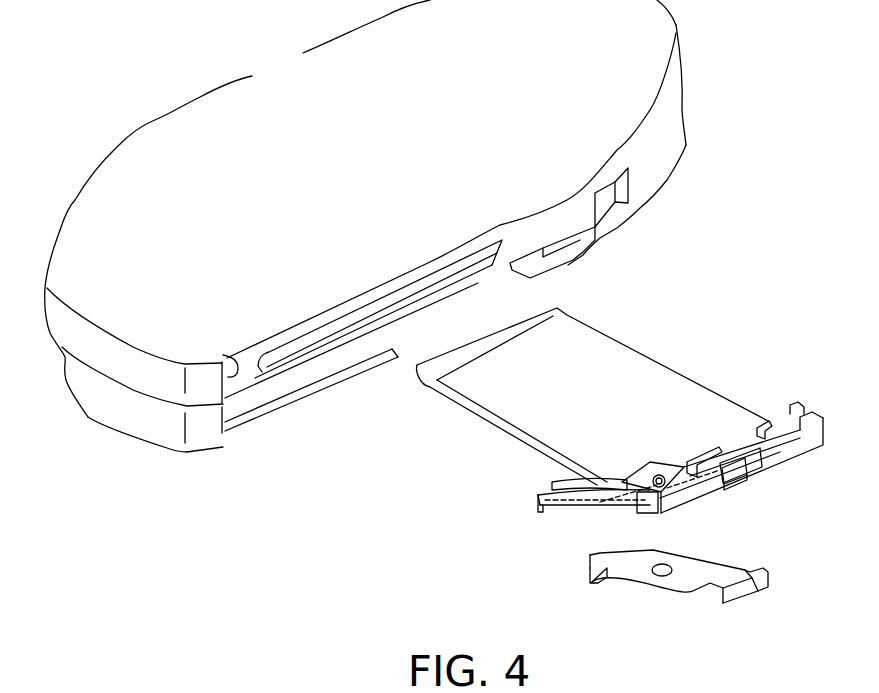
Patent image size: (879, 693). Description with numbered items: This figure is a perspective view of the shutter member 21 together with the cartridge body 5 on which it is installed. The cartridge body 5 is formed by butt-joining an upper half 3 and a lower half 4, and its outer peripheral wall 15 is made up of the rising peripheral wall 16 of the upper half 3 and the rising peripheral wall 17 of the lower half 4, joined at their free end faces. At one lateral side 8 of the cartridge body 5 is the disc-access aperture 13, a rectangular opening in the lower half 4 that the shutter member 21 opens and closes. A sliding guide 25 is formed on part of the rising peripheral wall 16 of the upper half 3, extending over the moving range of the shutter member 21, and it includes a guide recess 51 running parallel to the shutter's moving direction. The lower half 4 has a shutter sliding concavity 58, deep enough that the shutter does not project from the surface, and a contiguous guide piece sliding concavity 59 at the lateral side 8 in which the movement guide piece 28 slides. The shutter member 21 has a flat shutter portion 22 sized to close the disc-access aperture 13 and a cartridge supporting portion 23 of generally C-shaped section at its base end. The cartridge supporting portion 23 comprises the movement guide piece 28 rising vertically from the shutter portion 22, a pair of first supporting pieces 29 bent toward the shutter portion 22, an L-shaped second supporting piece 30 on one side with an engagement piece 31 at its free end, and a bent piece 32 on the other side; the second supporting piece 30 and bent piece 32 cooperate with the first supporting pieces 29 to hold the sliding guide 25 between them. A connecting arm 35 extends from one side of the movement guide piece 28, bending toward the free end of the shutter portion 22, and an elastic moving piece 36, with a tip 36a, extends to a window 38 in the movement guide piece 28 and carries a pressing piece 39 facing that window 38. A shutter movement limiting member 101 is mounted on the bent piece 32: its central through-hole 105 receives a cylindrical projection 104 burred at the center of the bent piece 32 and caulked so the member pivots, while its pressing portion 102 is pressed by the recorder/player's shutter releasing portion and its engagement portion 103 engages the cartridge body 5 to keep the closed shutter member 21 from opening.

The upper half 3 is at (125, 365).
The lower half 4 is at (132, 412).
The cartridge body 5 is at (53, 452).
The lateral side 8 is at (528, 232).
The disc-access aperture 13 is at (378, 348).
The outer peripheral wall 15 is at (752, 43).
The rising peripheral wall 16 is at (668, 88).
The rising peripheral wall 17 is at (678, 145).
The shutter member 21 is at (623, 348).
The shutter portion 22 is at (663, 370).
The cartridge supporting portion 23 is at (772, 457).
The sliding guide 25 is at (315, 345).
The movement guide piece 28 is at (798, 440).
The first supporting pieces 29 is at (765, 420).
The second supporting piece 30 is at (810, 417).
The engagement piece 31 is at (793, 400).
The bent piece 32 is at (660, 556).
The connecting arm 35 is at (582, 502).
The elastic moving piece 36 is at (595, 510).
The arm tip 36a is at (538, 510).
The window 38 is at (737, 472).
The pressing piece 39 is at (737, 485).
The guide recess 51 is at (422, 283).
The shutter sliding concavity 58 is at (230, 435).
The guide piece sliding concavity 59 is at (235, 355).
The shutter movement limiting member 101 is at (677, 588).
The pressing portion 102 is at (752, 588).
The engagement portion 103 is at (593, 575).
The cylindrical projection 104 is at (645, 512).
The through-hole 105 is at (670, 565).